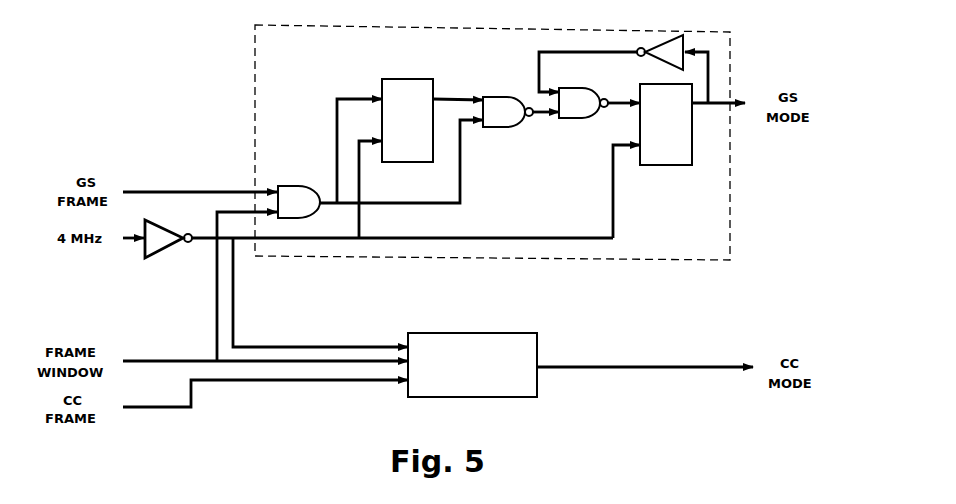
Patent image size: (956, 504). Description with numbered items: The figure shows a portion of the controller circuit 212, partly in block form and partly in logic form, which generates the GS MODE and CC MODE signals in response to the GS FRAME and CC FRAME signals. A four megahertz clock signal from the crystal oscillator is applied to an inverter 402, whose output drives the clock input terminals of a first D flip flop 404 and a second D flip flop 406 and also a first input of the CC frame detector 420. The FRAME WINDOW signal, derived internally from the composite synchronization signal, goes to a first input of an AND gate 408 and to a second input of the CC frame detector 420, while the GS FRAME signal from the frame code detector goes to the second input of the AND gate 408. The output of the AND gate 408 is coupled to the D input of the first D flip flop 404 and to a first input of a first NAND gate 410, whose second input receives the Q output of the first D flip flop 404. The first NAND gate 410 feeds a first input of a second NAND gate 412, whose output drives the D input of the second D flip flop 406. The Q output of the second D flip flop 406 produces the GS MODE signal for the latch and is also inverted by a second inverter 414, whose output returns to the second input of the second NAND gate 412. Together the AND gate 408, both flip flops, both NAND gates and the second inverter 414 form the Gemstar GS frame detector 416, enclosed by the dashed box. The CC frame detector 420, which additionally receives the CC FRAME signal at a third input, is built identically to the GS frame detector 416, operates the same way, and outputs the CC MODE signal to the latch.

The controller circuit 212 is at (173, 61).
The inverter 402 is at (167, 248).
The first D flip flop 404 is at (413, 164).
The second D flip flop 406 is at (677, 182).
The AND gate 408 is at (311, 182).
The first NAND gate 410 is at (508, 129).
The second NAND gate 412 is at (568, 121).
The second inverter 414 is at (662, 68).
The GS frame detector 416 is at (493, 258).
The CC frame detector 420 is at (469, 331).